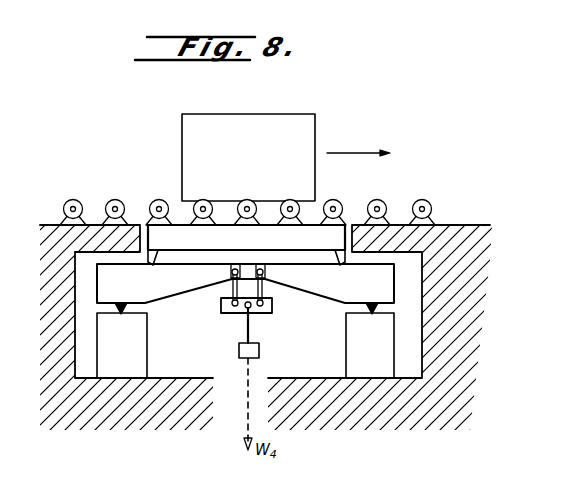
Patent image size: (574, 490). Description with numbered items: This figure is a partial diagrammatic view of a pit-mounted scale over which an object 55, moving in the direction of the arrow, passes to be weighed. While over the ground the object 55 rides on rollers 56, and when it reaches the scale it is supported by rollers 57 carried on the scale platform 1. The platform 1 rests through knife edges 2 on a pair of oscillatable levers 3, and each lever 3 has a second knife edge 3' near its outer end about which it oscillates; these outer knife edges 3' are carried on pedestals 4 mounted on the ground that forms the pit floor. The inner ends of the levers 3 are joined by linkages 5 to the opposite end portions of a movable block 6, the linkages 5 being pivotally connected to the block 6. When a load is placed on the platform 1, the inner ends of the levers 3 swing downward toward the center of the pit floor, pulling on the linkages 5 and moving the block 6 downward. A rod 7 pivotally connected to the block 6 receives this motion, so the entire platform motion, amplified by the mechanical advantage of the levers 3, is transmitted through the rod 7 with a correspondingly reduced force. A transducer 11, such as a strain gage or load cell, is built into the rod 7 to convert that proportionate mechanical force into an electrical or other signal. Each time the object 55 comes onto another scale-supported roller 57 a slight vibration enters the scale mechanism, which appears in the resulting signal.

The platform 1 is at (244, 244).
The knife edges 2 is at (184, 254).
The oscillatable levers 3 is at (245, 292).
The knife edges 3' is at (247, 312).
The pedestals 4 is at (148, 346).
The linkages 5 is at (230, 298).
The movable block 6 is at (224, 314).
The rod 7 is at (251, 325).
The transducer 11 is at (259, 351).
The object 55 is at (300, 139).
The rollers 56 is at (112, 199).
The rollers 57 is at (200, 198).